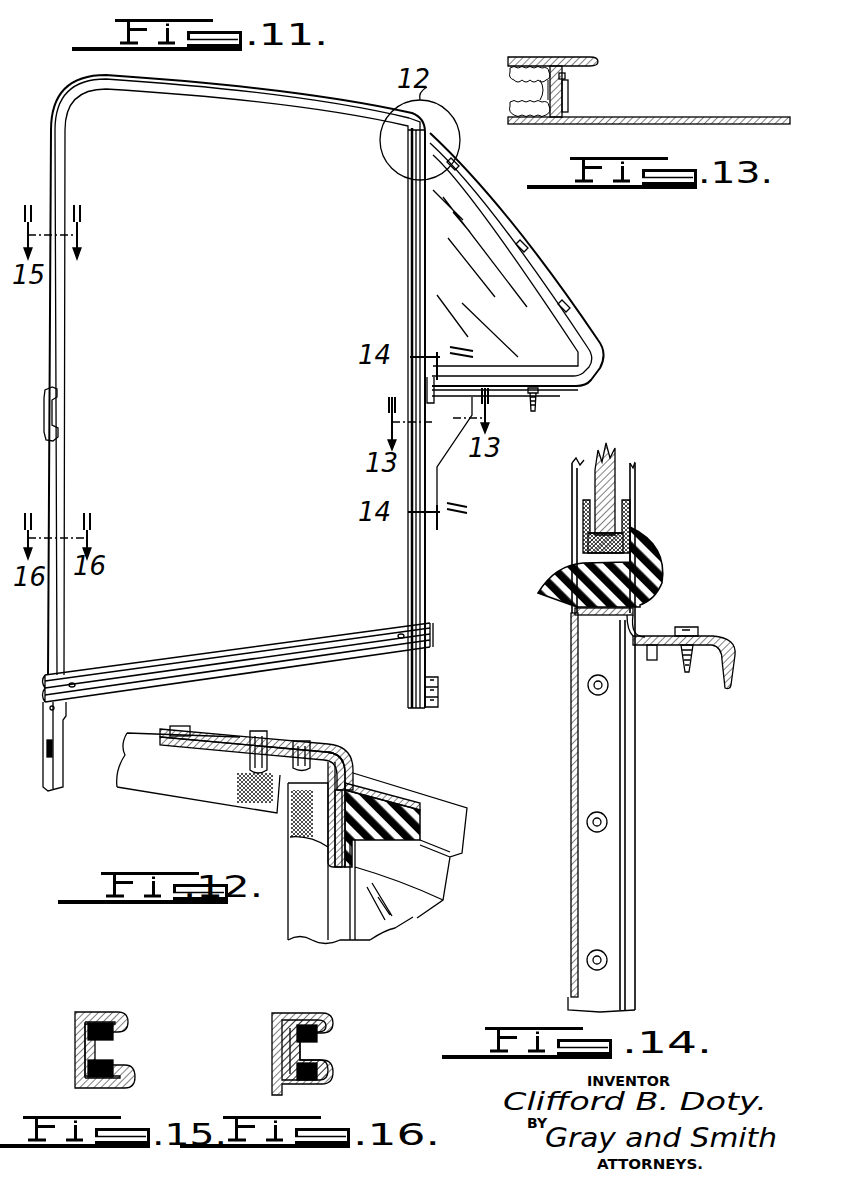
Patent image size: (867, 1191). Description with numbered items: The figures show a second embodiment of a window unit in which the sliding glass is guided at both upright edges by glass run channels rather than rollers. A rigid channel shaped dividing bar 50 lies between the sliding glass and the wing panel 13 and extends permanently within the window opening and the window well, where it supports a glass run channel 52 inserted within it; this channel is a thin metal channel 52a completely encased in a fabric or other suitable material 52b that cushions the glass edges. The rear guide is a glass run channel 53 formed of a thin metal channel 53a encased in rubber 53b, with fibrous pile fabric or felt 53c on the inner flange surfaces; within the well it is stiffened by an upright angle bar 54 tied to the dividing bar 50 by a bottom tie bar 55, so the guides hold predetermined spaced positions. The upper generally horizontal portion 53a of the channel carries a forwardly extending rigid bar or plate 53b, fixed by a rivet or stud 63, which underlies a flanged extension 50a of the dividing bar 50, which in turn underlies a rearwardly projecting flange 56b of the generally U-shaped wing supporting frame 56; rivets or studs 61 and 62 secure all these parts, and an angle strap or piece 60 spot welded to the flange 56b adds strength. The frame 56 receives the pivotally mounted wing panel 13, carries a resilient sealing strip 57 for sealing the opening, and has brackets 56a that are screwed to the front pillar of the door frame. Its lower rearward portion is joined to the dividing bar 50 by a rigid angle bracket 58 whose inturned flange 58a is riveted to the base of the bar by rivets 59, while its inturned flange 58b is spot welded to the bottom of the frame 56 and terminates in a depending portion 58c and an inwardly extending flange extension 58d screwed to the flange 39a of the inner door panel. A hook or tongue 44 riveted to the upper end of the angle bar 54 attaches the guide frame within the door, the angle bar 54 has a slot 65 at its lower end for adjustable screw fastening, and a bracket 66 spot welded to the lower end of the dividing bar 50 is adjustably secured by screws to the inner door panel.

In FIG. 11, the wing panel 13 is at (492, 315).
In FIG. 12, the wing panel 13 is at (402, 922).
In FIG. 14, the flange of the inner door panel 39a is at (690, 661).
In FIG. 11, the hook or tongue 44 is at (53, 428).
In FIG. 11, the channel shaped dividing bar 50 is at (406, 325).
In FIG. 13, the channel shaped dividing bar 50 is at (525, 57).
In FIG. 12, the channel shaped dividing bar 50 is at (293, 924).
In FIG. 13, the flanged extension 50a is at (597, 57).
In FIG. 12, the flanged extension 50a is at (233, 735).
In FIG. 13, the glass run channel 52 is at (507, 73).
In FIG. 13, the thin metal channel 52a is at (513, 110).
In FIG. 13, the fabric or other suitable material 52b is at (520, 97).
In FIG. 11, the glass run channel 53 is at (66, 365).
In FIG. 11, the thin metal channel 53a is at (257, 100).
In FIG. 12, the thin metal channel 53a is at (183, 778).
In FIG. 15, the thin metal channel 53a is at (103, 1013).
In FIG. 16, the thin metal channel 53a is at (310, 1017).
In FIG. 12, the rubber 53b is at (200, 733).
In FIG. 15, the rubber 53b is at (123, 1017).
In FIG. 16, the rubber 53b is at (332, 1020).
In FIG. 15, the fibrous pile fabric or felt 53c is at (117, 1067).
In FIG. 16, the fibrous pile fabric or felt 53c is at (325, 1070).
In FIG. 11, the upright angle bar 54 is at (64, 608).
In FIG. 16, the upright angle bar 54 is at (273, 1045).
In FIG. 11, the bottom tie bar 55 is at (311, 612).
In FIG. 11, the wing supporting frame 56 is at (503, 223).
In FIG. 14, the wing supporting frame 56 is at (640, 603).
In FIG. 12, the wing supporting frame 56 is at (432, 820).
In FIG. 11, the brackets 56a is at (459, 170).
In FIG. 12, the rearwardly projecting flange 56b is at (293, 740).
In FIG. 14, the resilient sealing strip 57 is at (660, 555).
In FIG. 11, the rigid angle bracket 58 is at (440, 465).
In FIG. 13, the rigid angle bracket 58 is at (643, 116).
In FIG. 14, the rigid angle bracket 58 is at (568, 738).
In FIG. 13, the inturned flange 58a is at (567, 77).
In FIG. 14, the inturned flange 58b is at (597, 622).
In FIG. 14, the depending portion 58c is at (633, 618).
In FIG. 14, the inwardly extending flange extension 58d is at (708, 637).
In FIG. 13, the rivets 59 is at (568, 96).
In FIG. 14, the rivets 59 is at (607, 693).
In FIG. 12, the angle strap or piece 60 is at (340, 760).
In FIG. 12, the rivets or studs 61 is at (307, 741).
In FIG. 12, the rivets or studs 62 is at (260, 731).
In FIG. 12, the rivet or stud 63 is at (187, 730).
In FIG. 11, the slot 65 is at (53, 741).
In FIG. 11, the bracket 66 is at (433, 688).